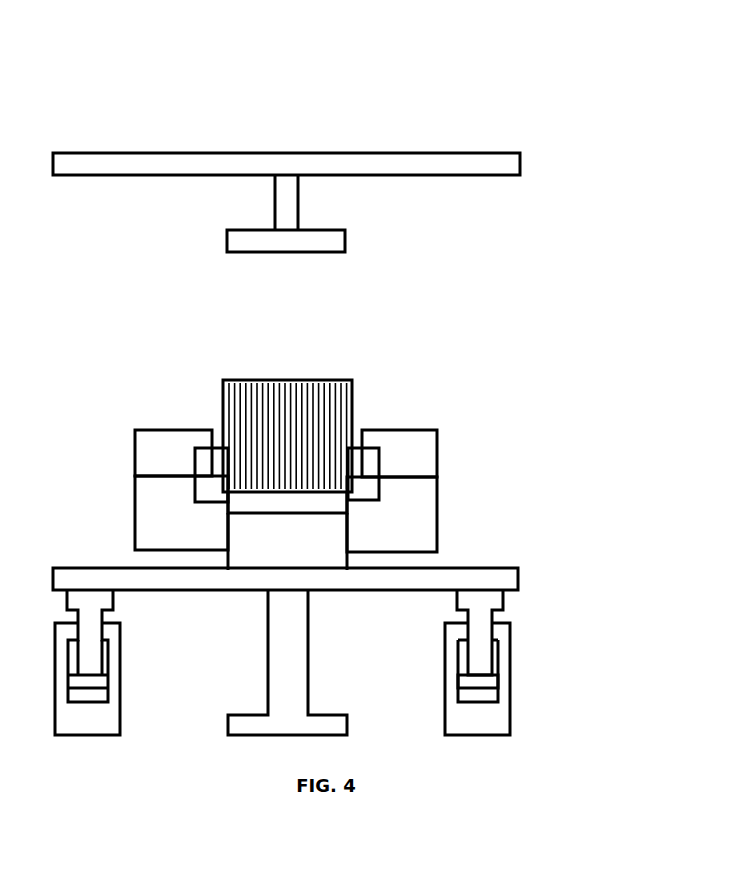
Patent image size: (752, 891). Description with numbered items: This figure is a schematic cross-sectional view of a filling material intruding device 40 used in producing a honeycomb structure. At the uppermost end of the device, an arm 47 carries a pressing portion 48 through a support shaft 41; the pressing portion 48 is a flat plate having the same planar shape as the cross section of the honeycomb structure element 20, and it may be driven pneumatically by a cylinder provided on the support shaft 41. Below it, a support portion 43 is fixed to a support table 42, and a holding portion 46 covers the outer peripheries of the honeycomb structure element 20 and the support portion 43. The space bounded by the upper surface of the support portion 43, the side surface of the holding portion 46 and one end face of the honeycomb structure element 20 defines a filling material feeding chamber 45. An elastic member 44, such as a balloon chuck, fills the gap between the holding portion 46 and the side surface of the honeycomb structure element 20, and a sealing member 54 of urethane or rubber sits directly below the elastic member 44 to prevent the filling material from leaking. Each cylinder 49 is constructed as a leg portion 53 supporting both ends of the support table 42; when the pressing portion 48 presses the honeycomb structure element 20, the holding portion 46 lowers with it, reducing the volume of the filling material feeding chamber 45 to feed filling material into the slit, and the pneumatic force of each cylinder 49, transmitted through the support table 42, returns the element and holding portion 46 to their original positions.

The filling material intruding device 40 is at (331, 120).
The arm 47 is at (450, 175).
The support shaft 41 is at (298, 198).
The pressing portion 48 is at (345, 240).
The honeycomb structure element 20 is at (285, 380).
The elastic member 44 is at (373, 450).
The filling material feeding chamber 45 is at (258, 505).
The holding portion 46 is at (437, 443).
The sealing member 54 is at (193, 495).
The support table 42 is at (485, 568).
The support portion 43 is at (249, 563).
The leg portion 53 is at (513, 644).
The cylinder 49 is at (500, 693).